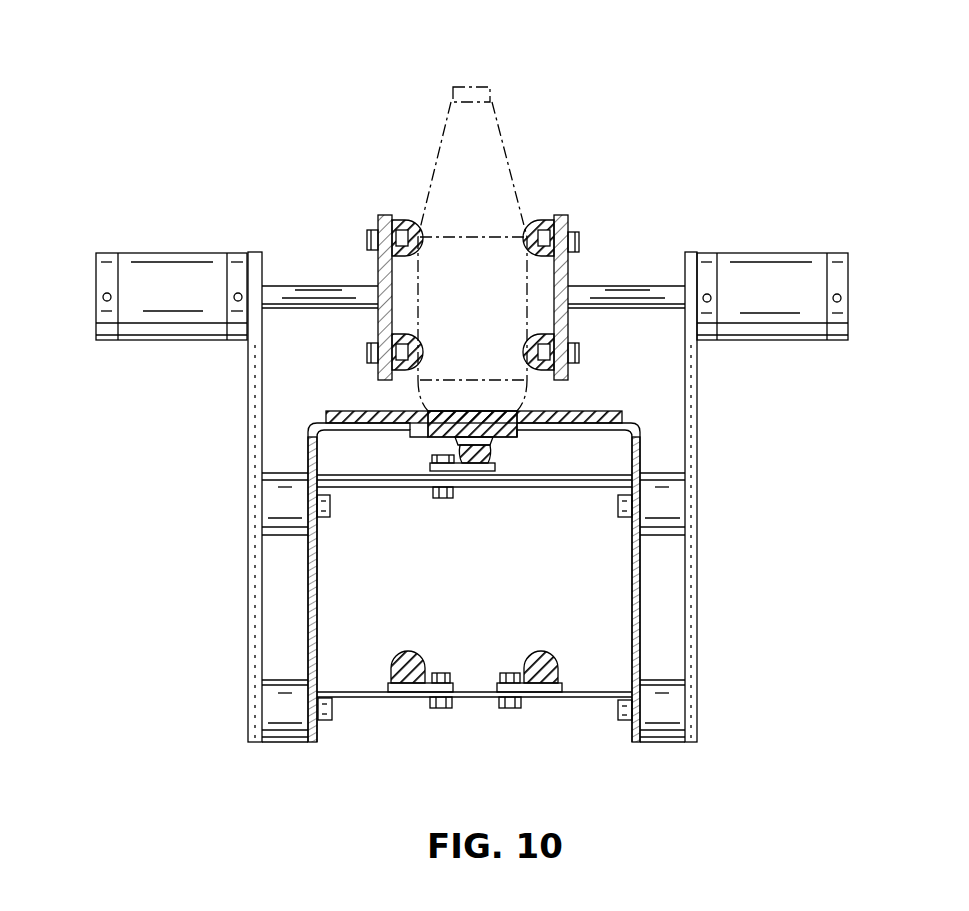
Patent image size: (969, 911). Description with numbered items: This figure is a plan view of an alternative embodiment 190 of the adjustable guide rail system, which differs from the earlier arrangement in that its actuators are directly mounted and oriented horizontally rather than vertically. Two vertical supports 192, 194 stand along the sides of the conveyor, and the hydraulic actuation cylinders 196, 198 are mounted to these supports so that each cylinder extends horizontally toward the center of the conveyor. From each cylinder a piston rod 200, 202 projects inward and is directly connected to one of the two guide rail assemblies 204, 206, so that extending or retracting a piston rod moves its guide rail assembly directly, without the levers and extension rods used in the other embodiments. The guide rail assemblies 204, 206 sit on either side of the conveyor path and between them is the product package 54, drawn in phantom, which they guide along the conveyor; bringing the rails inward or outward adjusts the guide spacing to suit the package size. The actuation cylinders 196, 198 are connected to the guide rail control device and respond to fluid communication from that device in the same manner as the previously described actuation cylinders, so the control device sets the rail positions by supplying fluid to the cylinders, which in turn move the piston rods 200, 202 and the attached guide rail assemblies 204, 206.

The embodiment 190 is at (194, 78).
The vertical support 192 is at (697, 608).
The vertical support 194 is at (250, 645).
The actuation cylinder 196 is at (838, 262).
The actuation cylinder 198 is at (110, 262).
The piston rod 200 is at (588, 297).
The piston rod 202 is at (328, 292).
The guide rail assembly 204 is at (562, 217).
The guide rail assembly 206 is at (386, 215).
The product package 54 is at (518, 172).